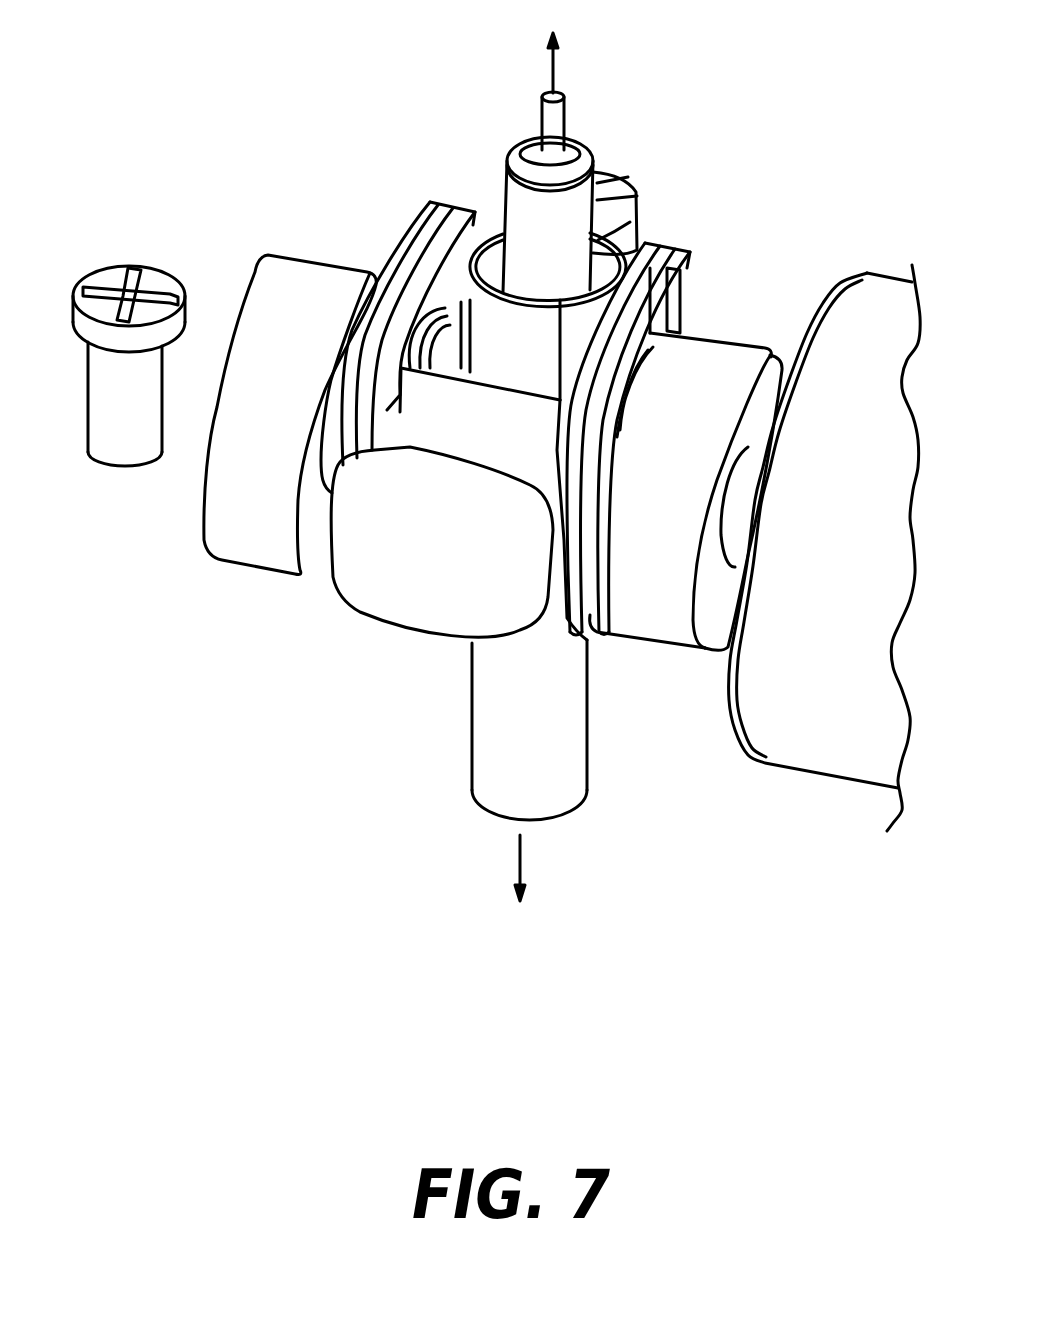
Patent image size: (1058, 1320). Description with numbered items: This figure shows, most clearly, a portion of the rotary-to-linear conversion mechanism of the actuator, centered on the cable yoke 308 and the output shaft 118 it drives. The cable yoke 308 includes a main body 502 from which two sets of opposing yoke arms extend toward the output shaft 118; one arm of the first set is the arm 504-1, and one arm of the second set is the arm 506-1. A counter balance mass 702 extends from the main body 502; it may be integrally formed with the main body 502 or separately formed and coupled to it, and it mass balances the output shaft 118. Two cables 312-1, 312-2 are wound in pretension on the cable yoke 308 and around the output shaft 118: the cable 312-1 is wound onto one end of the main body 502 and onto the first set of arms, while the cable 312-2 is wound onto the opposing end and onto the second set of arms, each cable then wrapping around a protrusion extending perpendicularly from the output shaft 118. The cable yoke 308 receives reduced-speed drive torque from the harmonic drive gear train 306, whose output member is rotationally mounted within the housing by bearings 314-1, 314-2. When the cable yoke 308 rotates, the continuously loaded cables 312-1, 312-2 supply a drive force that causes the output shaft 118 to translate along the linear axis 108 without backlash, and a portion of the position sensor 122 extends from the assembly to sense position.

The position sensor 122 is at (508, 160).
The linear axis 108 is at (553, 73).
The cable 312-2 is at (463, 212).
The cable 312-1 is at (663, 250).
The arm 506-1 is at (403, 237).
The bearing 314-2 is at (257, 297).
The arm 504-1 is at (692, 257).
The harmonic drive gear train 306 is at (870, 273).
The bearing 314-1 is at (709, 350).
The main body 502 is at (507, 436).
The cable yoke 308 is at (322, 593).
The counter balance mass 702 is at (350, 580).
The output shaft 118 is at (570, 743).